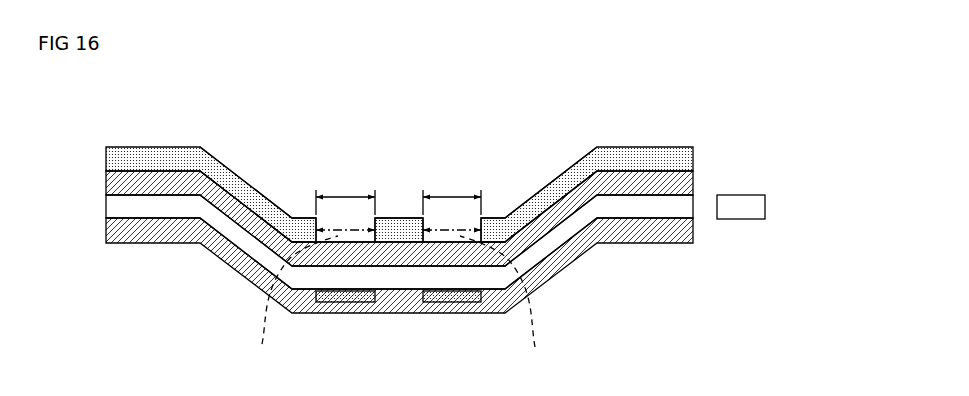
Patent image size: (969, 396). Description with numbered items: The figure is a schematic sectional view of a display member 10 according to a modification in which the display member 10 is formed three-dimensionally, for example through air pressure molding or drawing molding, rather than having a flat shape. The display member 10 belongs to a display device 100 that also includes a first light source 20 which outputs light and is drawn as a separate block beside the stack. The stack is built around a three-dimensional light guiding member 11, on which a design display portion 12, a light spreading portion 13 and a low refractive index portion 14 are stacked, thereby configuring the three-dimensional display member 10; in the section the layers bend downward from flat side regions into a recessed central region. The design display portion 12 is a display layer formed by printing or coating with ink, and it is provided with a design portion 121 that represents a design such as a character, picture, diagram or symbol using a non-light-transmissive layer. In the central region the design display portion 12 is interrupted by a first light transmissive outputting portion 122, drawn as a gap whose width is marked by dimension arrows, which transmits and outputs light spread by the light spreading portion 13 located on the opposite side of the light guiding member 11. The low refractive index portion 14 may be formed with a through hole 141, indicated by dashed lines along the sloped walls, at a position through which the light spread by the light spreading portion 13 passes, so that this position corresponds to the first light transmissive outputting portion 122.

The display member 10 is at (622, 109).
The light guiding member 11 is at (128, 207).
The design display portion 12 is at (132, 156).
The light spreading portion 13 is at (437, 294).
The low refractive index portion 14 is at (132, 185).
The first light source 20 is at (743, 208).
The display device 100 is at (668, 317).
The design portion 121 is at (400, 228).
The first light transmissive outputting portion 122 is at (345, 193).
The through hole 141 is at (262, 344).